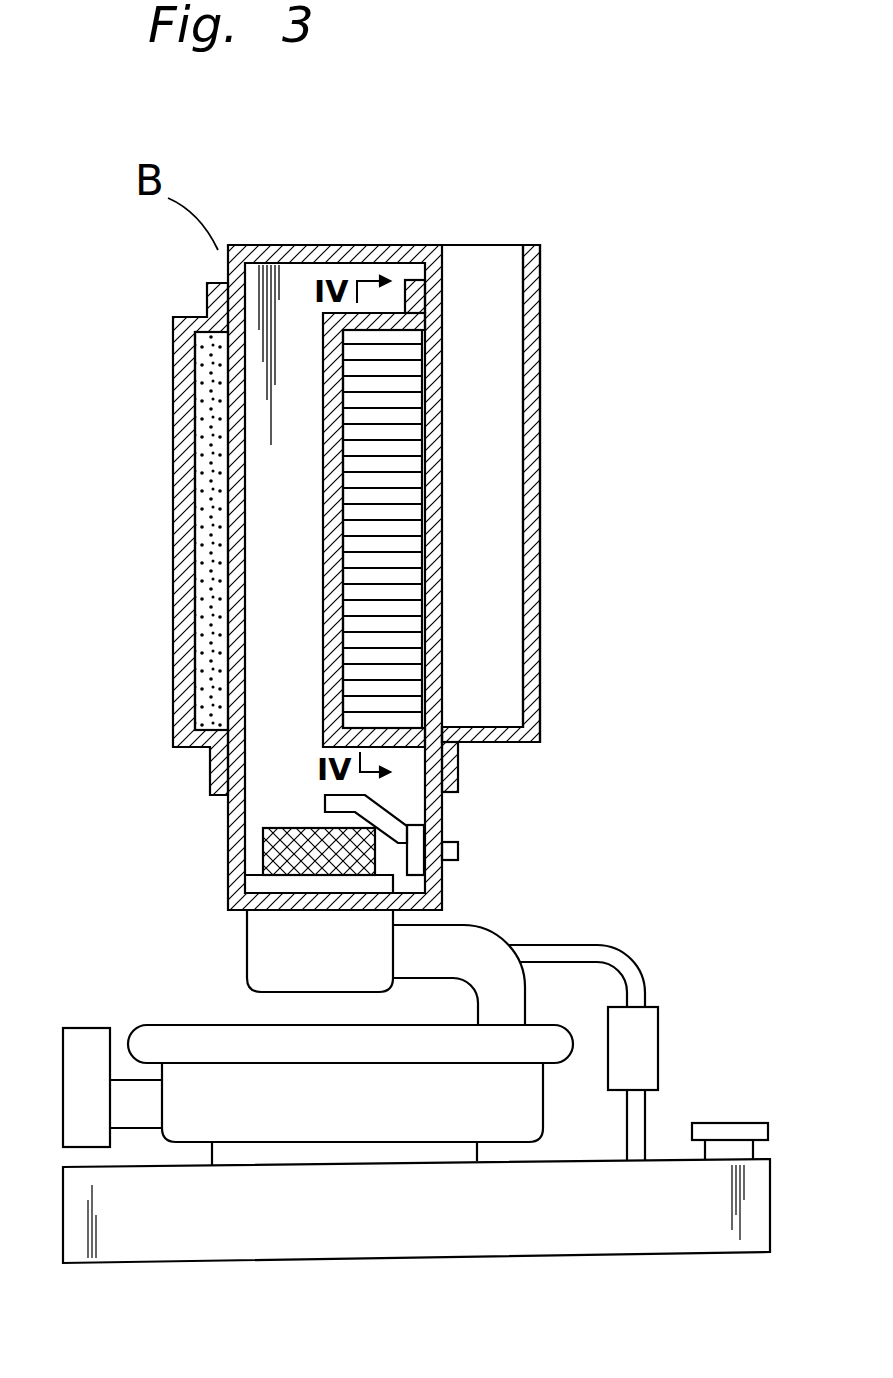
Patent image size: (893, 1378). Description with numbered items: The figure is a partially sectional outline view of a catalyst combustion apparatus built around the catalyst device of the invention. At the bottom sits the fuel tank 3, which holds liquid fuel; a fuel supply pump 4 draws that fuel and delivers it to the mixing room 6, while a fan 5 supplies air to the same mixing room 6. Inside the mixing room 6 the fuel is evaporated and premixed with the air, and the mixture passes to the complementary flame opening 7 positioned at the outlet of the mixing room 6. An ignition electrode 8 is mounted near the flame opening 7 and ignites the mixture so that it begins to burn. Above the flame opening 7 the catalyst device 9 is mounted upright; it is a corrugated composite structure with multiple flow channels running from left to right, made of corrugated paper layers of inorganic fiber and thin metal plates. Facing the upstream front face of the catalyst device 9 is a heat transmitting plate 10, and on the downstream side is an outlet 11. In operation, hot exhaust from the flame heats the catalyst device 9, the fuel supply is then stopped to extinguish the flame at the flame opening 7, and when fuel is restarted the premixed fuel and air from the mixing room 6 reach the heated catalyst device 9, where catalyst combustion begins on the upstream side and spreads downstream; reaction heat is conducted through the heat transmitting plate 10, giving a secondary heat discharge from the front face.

The fuel tank 3 is at (520, 1233).
The fuel supply pump 4 is at (643, 1022).
The fan 5 is at (338, 1118).
The mixing room 6 is at (260, 957).
The complementary flame opening 7 is at (262, 835).
The ignition electrode 8 is at (440, 815).
The catalyst device 9 is at (413, 367).
The heat transmitting plate 10 is at (195, 568).
The outlet 11 is at (462, 258).